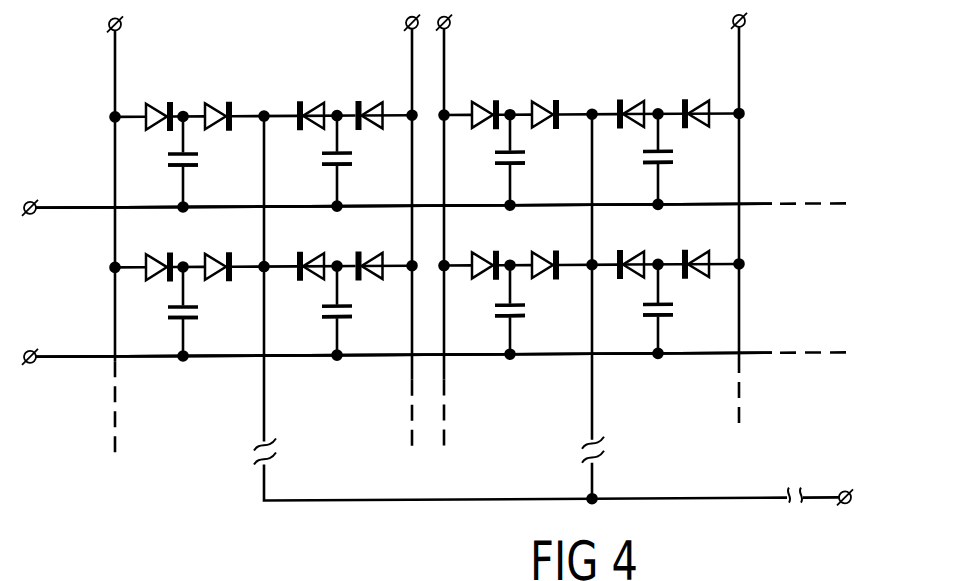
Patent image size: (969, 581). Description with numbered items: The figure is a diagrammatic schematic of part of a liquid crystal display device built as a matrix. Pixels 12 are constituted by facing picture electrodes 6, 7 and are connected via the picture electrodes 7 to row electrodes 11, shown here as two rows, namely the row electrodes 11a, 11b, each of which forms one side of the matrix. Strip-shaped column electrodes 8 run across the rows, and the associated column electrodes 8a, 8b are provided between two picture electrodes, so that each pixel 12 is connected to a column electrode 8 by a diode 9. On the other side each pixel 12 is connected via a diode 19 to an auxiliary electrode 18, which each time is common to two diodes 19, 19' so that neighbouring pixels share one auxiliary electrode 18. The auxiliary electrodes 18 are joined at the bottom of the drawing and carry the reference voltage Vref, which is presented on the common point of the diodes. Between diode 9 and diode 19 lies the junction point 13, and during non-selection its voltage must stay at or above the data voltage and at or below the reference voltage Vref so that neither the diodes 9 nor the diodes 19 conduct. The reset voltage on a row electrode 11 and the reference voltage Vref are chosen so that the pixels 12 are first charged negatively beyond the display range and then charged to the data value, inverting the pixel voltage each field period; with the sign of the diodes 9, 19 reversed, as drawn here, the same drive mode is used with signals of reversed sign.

The column electrode 8 is at (108, 25).
The column electrode 8a is at (406, 24).
The column electrode 8b is at (450, 24).
The diode 9 is at (150, 104).
The diode 19 is at (383, 166).
The diode 19' is at (471, 166).
The junction point 13 is at (183, 111).
The picture electrode 6 is at (168, 155).
The pixel 12 is at (198, 167).
The row electrode 11 is at (404, 256).
The row electrode 11a is at (48, 206).
The row electrode 11b is at (57, 354).
The picture electrode 7 is at (404, 256).
The auxiliary electrode 18 is at (264, 394).
The reference voltage Vref is at (845, 509).